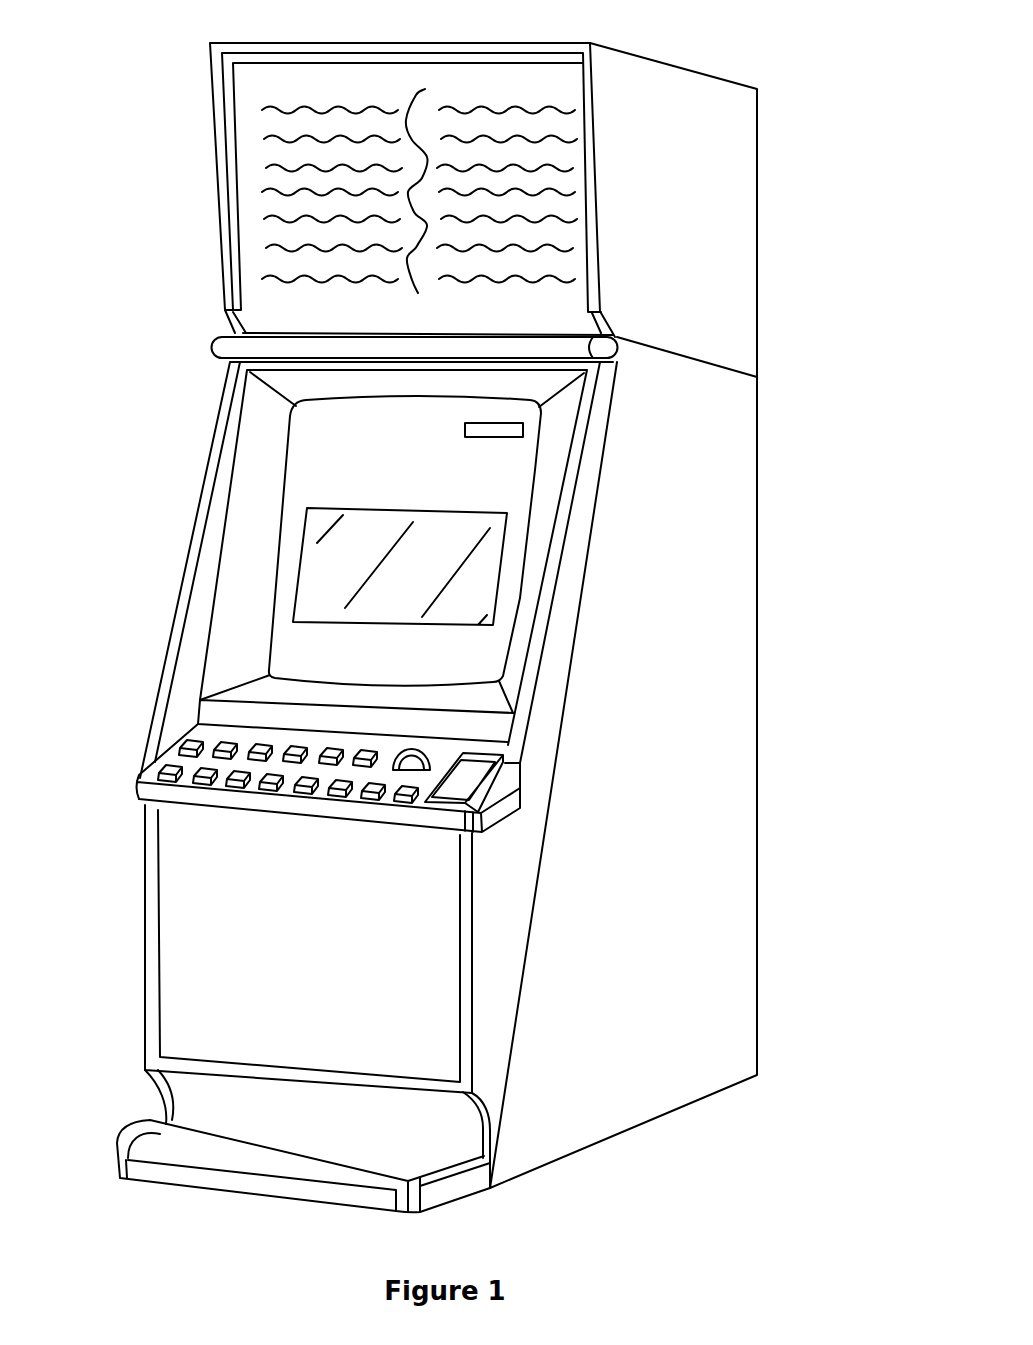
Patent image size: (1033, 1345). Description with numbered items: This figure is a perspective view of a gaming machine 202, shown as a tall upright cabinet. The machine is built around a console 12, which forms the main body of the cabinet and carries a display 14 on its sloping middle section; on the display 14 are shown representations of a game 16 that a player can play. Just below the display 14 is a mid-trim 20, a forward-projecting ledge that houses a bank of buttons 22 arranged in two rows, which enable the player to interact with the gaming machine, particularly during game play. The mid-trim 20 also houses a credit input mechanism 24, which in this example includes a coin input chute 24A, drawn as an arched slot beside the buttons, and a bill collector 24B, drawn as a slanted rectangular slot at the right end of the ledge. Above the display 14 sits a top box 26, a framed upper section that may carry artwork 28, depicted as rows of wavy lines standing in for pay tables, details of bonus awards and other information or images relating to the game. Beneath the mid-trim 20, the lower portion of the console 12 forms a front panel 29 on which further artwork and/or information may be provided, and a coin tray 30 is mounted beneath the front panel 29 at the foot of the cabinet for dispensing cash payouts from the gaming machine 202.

The gaming machine 202 is at (726, 58).
The console 12 is at (720, 582).
The display 14 is at (268, 635).
The game 16 is at (297, 572).
The mid-trim 20 is at (138, 790).
The bank of buttons 22 is at (228, 793).
The credit input mechanism 24 is at (460, 728).
The coin input chute 24A is at (430, 753).
The bill collector 24B is at (447, 795).
The top box 26 is at (215, 227).
The artwork 28 is at (270, 118).
The front panel 29 is at (190, 993).
The coin tray 30 is at (117, 1167).